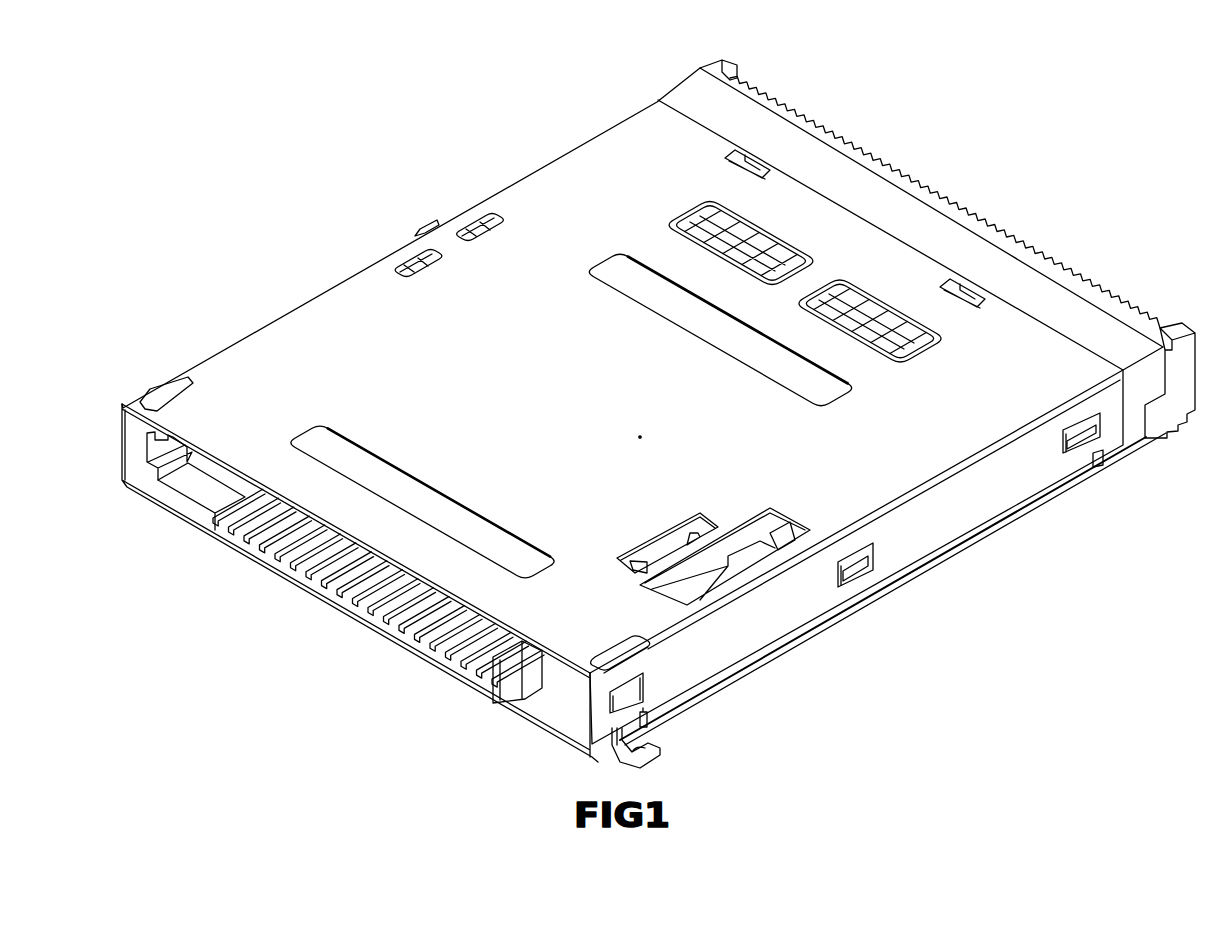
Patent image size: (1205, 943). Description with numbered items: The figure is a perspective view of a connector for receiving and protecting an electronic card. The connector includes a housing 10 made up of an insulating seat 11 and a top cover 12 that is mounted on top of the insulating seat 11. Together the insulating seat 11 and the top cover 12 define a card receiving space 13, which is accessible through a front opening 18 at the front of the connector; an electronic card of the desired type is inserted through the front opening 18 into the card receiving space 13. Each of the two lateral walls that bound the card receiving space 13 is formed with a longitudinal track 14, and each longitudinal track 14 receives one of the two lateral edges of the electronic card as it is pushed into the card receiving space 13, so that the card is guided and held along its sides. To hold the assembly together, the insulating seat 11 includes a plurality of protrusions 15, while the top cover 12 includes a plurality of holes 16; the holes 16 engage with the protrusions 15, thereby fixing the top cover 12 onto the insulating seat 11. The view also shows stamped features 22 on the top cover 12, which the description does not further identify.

The housing 10 is at (970, 175).
The insulating seat 11 is at (983, 535).
The top cover 12 is at (350, 300).
The card receiving space 13 is at (186, 486).
The longitudinal track 14 is at (155, 470).
The protrusions 15 is at (855, 572).
The holes 16 is at (875, 548).
The front opening 18 is at (197, 498).
The elastic pressing arms 22 is at (688, 226).